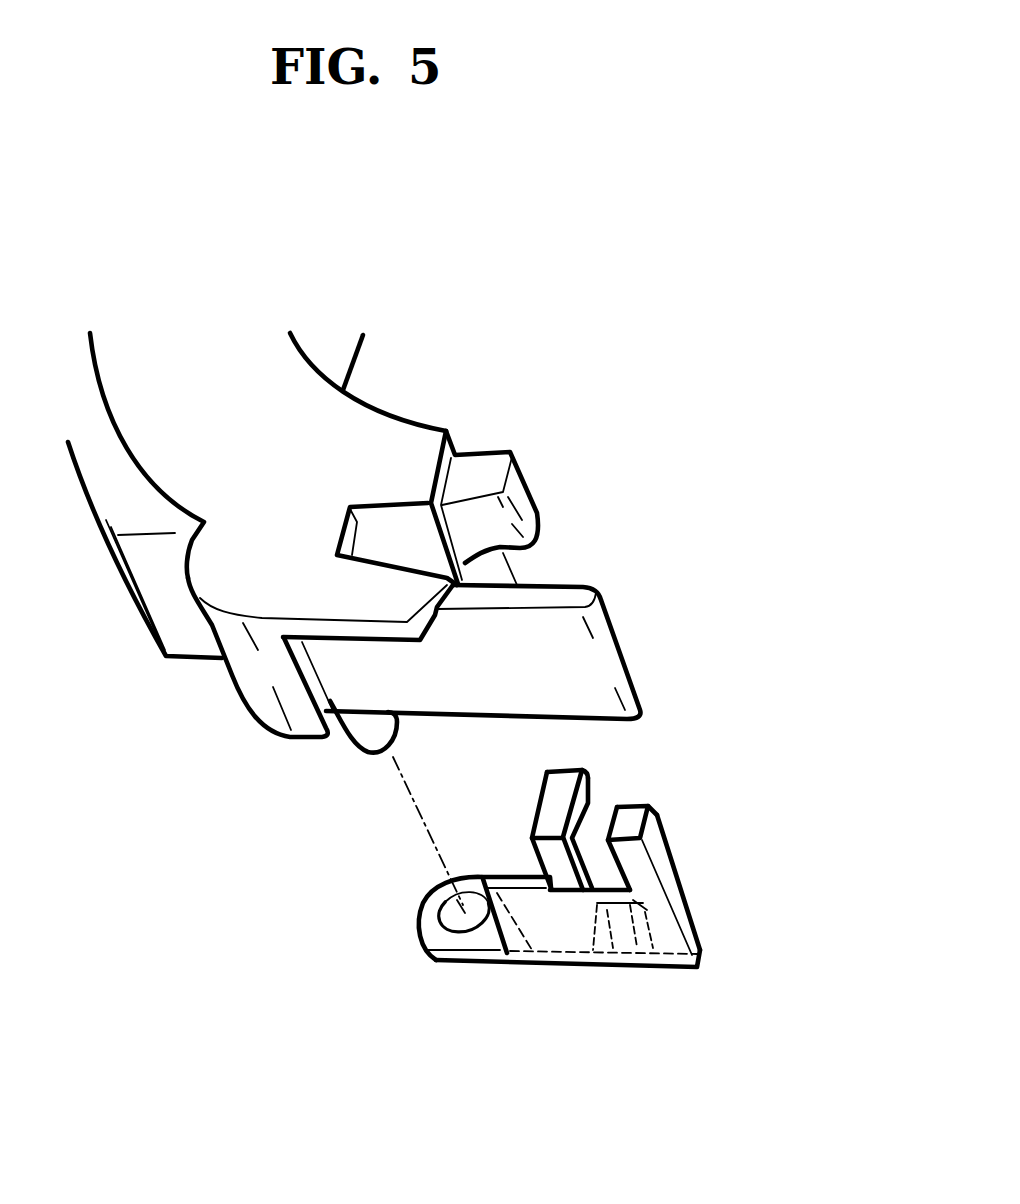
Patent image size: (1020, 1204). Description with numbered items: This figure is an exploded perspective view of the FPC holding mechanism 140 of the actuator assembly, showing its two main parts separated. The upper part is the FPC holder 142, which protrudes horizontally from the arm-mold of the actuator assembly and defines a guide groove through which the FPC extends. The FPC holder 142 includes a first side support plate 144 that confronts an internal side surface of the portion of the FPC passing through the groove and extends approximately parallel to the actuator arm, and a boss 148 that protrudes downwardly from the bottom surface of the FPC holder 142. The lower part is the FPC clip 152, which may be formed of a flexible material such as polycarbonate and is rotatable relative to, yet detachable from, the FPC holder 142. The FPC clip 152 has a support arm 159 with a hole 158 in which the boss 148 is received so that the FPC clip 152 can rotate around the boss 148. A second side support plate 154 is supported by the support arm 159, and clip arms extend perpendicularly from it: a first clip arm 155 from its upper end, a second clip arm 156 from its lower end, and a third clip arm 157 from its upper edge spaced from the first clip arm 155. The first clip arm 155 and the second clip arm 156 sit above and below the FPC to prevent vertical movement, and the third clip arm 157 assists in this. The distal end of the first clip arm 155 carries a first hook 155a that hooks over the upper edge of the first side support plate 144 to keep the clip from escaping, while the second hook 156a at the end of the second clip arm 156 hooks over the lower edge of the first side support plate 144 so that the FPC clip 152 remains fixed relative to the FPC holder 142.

The FPC holding mechanism 140 is at (388, 606).
The FPC holder 142 is at (239, 683).
The first side support plate 144 is at (613, 655).
The boss 148 is at (362, 738).
The FPC clip 152 is at (610, 892).
The second side support plate 154 is at (547, 918).
The first clip arm 155 is at (545, 813).
The first hook 155a is at (590, 801).
The second clip arm 156 is at (613, 940).
The second hook 156a is at (647, 917).
The third clip arm 157 is at (657, 828).
The hole 158 is at (450, 915).
The support arm 159 is at (445, 952).